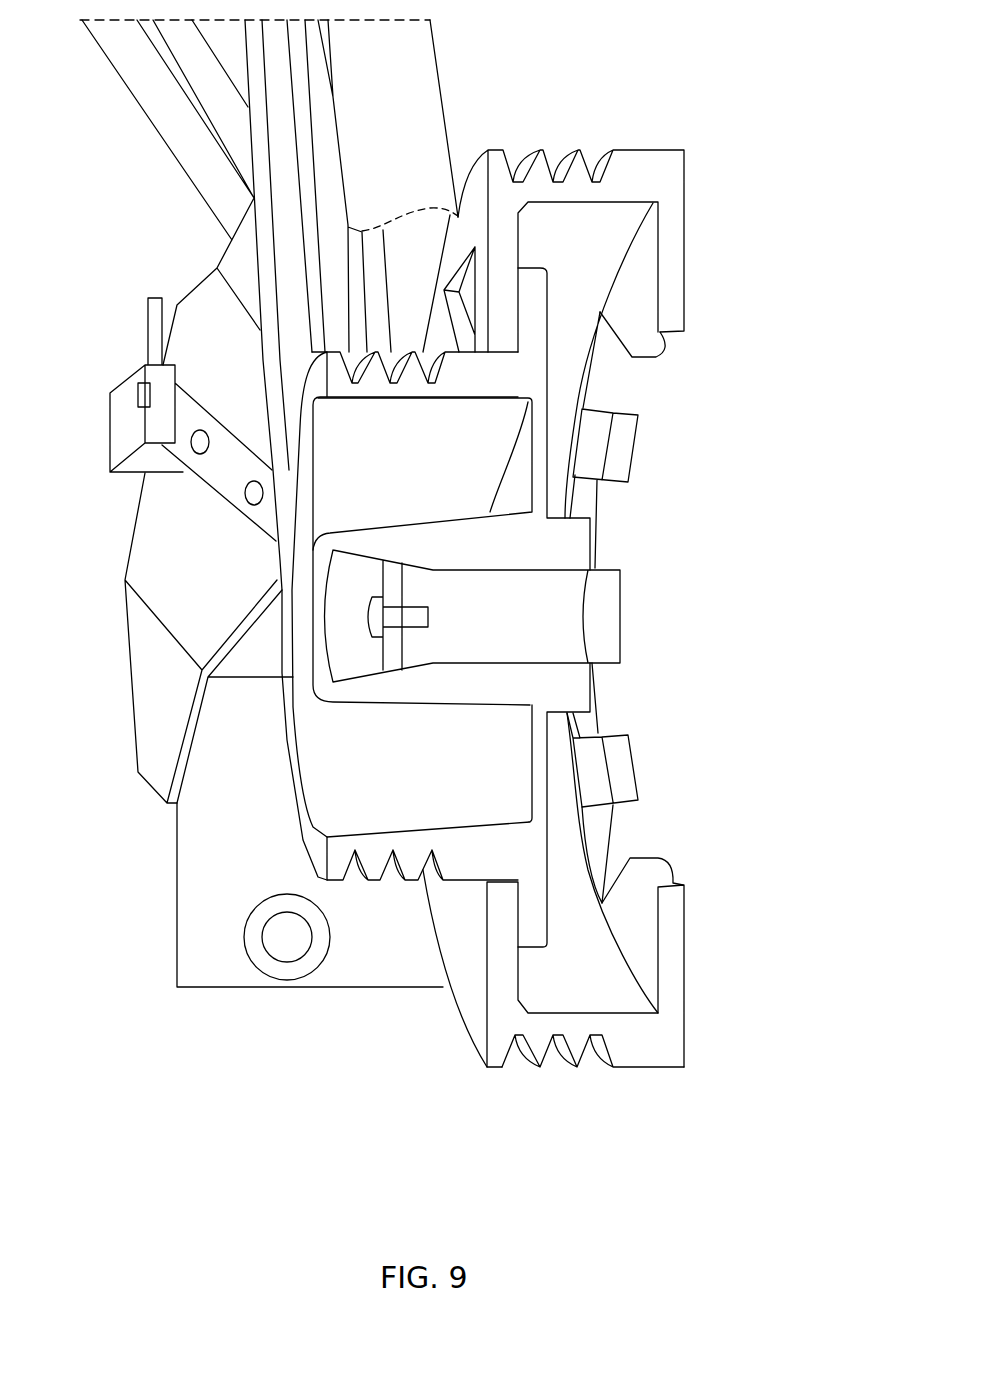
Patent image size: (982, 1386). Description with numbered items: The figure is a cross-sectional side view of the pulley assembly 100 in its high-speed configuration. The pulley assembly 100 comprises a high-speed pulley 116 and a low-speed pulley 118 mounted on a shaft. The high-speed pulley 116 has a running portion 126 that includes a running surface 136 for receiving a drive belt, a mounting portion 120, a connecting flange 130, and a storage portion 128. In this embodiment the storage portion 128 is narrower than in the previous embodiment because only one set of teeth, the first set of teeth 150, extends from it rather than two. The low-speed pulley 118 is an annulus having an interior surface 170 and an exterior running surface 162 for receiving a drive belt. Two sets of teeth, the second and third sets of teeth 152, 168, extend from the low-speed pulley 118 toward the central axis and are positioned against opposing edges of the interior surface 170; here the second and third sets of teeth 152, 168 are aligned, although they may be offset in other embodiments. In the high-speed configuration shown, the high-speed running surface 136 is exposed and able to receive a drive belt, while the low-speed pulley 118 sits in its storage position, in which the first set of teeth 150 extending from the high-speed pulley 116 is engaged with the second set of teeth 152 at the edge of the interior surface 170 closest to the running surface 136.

The pulley assembly 100 is at (415, 1040).
The high-speed pulley 116 is at (482, 858).
The low-speed pulley 118 is at (660, 1050).
The mounting portion 120 is at (357, 688).
The running portion 126 is at (272, 851).
The storage portion 128 is at (533, 843).
The connecting flange 130 is at (540, 452).
The running surface 136 is at (377, 882).
The first set of teeth 150 is at (530, 917).
The second set of teeth 152 is at (495, 255).
The running surface 162 is at (611, 1090).
The third set of teeth 168 is at (670, 268).
The interior surface 170 is at (590, 993).